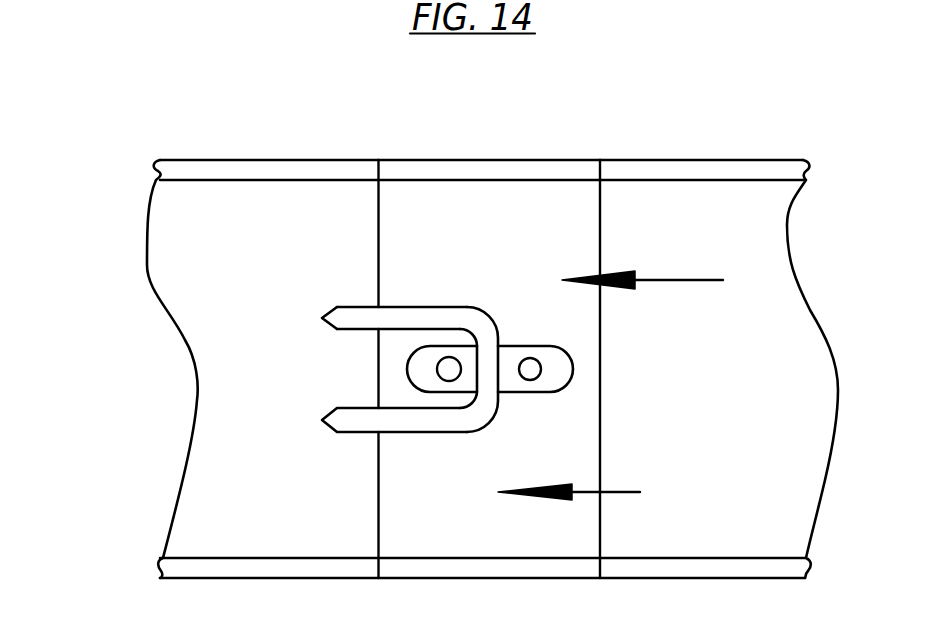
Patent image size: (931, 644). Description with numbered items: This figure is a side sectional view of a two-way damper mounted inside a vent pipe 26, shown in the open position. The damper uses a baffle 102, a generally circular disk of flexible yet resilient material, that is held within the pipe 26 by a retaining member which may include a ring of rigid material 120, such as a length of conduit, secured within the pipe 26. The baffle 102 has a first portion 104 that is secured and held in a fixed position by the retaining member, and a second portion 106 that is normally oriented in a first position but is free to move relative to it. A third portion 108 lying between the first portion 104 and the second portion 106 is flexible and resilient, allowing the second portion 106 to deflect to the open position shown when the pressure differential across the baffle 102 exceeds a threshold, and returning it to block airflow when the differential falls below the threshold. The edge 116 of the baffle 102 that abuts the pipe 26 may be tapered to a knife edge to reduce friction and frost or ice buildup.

The pipe 26 is at (500, 327).
The baffle 102 is at (340, 254).
The first portion 104 is at (502, 343).
The second portion 106 is at (327, 312).
The third portion 108 is at (485, 313).
The edge 116 is at (323, 318).
The ring of rigid material 120 is at (456, 174).